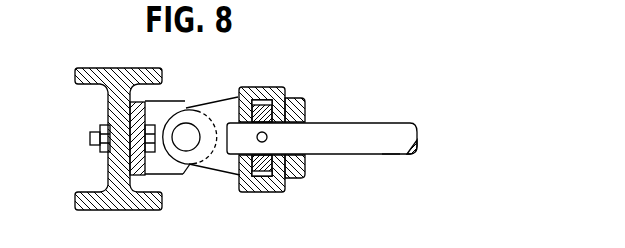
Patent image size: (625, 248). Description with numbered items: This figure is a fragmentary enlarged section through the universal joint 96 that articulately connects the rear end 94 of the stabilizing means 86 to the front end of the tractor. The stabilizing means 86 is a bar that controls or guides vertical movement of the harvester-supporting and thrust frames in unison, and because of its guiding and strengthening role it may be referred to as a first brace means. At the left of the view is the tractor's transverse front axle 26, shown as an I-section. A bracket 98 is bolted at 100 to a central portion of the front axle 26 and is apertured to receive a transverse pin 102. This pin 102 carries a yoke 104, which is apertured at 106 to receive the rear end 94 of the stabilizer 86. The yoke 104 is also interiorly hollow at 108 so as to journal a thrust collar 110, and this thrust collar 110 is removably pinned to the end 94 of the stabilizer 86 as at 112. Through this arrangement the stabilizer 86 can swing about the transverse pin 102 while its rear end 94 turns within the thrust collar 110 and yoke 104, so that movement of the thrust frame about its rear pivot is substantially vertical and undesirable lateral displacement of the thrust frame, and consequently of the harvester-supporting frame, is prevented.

The transverse axle 26 is at (86, 72).
The stabilizing means 86 is at (383, 158).
The rear end 94 is at (368, 132).
The universal joint 96 is at (208, 97).
The bracket 98 is at (182, 168).
The bolt 100 is at (90, 138).
The transverse pin 102 is at (186, 135).
The yoke 104 is at (224, 100).
The aperture 106 is at (299, 154).
The hollow interior 108 is at (272, 91).
The thrust collar 110 is at (268, 172).
The pin 112 is at (267, 136).